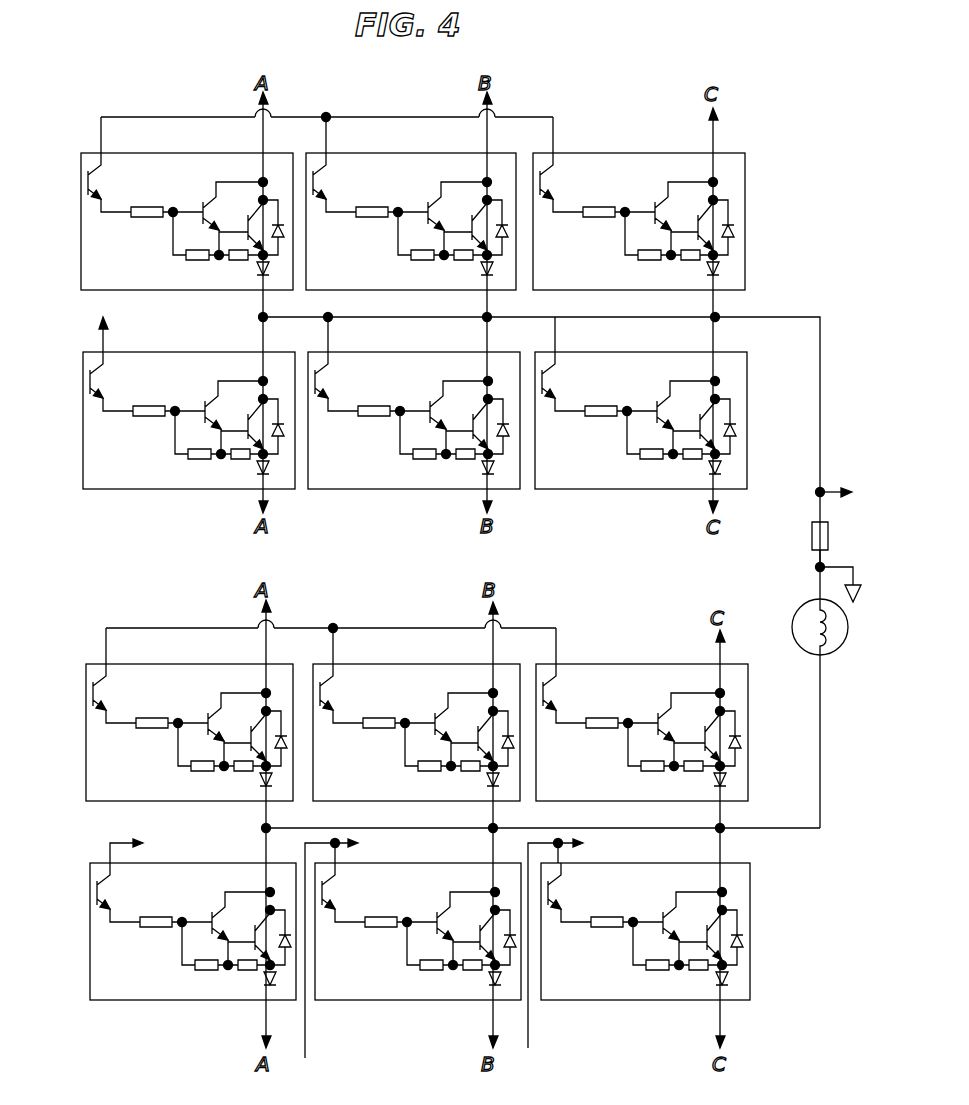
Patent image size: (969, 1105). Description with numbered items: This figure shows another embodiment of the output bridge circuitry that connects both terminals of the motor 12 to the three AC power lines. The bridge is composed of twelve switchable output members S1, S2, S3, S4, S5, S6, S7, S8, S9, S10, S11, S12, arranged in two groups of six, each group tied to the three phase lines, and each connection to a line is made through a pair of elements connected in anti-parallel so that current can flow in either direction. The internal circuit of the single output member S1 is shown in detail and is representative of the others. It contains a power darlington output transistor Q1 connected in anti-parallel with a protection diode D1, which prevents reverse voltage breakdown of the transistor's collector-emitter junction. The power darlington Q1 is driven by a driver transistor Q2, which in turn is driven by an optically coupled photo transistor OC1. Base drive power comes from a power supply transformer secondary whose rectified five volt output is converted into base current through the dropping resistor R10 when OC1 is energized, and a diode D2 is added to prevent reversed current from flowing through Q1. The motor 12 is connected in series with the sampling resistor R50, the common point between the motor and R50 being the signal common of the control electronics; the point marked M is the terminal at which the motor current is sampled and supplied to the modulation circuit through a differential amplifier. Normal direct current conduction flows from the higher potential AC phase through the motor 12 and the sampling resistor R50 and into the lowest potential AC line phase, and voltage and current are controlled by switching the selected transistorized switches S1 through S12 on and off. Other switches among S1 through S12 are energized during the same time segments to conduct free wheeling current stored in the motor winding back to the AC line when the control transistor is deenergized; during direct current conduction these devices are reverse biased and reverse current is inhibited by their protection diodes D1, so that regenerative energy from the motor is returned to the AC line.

The optical coupled photo transistor OC1 is at (114, 182).
The dropping resistor R10 is at (141, 222).
The driver transistor Q2 is at (233, 218).
The power darlington output transistor Q1 is at (261, 226).
The protection diode D1 is at (285, 227).
The diode D2 is at (242, 274).
The switchable output member S1 is at (160, 221).
The switchable output member S2 is at (161, 420).
The switchable output member S3 is at (414, 420).
The switchable output member S4 is at (411, 221).
The switchable output member S5 is at (639, 221).
The switchable output member S6 is at (641, 420).
The switchable output member S7 is at (189, 732).
The switchable output member S8 is at (193, 931).
The switchable output member S9 is at (416, 732).
The switchable output member S10 is at (418, 931).
The switchable output member S11 is at (642, 732).
The switchable output member S12 is at (645, 931).
The motor terminal M is at (835, 479).
The sampling resistor R50 is at (805, 562).
The motor 12 is at (806, 608).